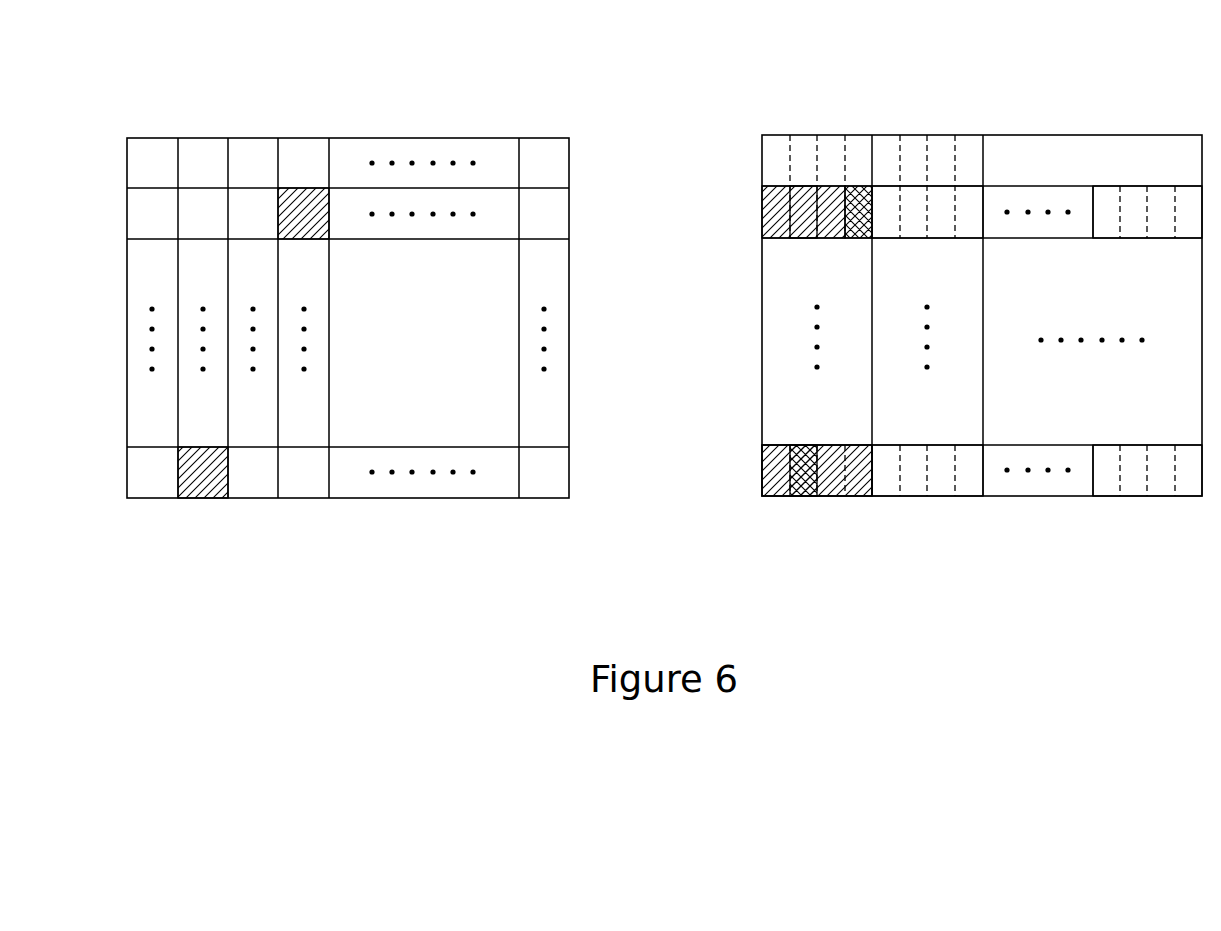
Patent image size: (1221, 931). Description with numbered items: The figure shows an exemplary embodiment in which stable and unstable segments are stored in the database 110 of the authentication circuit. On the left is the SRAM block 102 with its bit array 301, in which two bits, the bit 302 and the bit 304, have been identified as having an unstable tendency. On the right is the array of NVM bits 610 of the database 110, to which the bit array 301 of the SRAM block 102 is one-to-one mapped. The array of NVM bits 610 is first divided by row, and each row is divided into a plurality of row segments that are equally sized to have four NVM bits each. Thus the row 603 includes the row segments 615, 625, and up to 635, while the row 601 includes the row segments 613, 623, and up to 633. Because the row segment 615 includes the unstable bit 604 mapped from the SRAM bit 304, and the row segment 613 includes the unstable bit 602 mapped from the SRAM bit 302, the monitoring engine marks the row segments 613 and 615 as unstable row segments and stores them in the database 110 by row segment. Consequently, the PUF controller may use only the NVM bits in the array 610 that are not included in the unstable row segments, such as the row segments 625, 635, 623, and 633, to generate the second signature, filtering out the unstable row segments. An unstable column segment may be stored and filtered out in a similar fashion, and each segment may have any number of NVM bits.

The SRAM block 102 is at (348, 357).
The bit array 301 is at (348, 556).
The bit 302 is at (205, 490).
The bit 304 is at (305, 183).
The database 110 is at (930, 357).
The array of NVM bits 610 is at (982, 556).
The row 601 is at (746, 471).
The unstable bit 602 is at (805, 488).
The row 603 is at (746, 210).
The unstable bit 604 is at (860, 195).
The row segment 613 is at (762, 443).
The row segment 615 is at (805, 193).
The row segment 623 is at (983, 443).
The row segment 625 is at (983, 245).
The row segment 633 is at (1202, 443).
The row segment 635 is at (1202, 245).